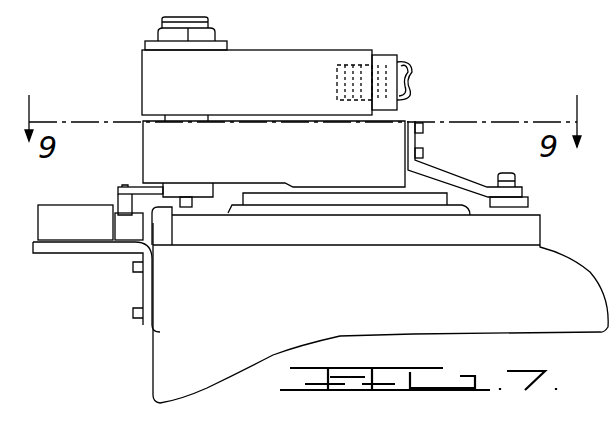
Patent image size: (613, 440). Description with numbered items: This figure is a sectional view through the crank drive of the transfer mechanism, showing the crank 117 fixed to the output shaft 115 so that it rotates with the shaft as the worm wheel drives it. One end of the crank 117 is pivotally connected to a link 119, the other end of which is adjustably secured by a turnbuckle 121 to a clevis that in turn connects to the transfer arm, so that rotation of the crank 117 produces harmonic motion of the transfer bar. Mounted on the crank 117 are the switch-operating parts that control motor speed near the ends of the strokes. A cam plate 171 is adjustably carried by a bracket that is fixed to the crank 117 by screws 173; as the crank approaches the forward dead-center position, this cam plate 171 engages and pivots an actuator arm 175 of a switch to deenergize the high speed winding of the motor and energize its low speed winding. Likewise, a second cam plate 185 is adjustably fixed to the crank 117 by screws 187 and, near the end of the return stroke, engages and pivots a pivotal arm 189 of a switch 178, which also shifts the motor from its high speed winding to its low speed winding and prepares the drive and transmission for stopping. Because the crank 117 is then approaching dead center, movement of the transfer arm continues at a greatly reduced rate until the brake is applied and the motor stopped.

The link 119 is at (280, 57).
The turnbuckle 121 is at (403, 63).
The screws 173 is at (423, 150).
The crank 117 is at (148, 152).
The output shaft 115 is at (415, 185).
The cam plate 171 is at (533, 198).
The cam plate 185 is at (205, 188).
The screws 187 is at (192, 198).
The pivotal arm 189 is at (160, 186).
The switch 178 is at (130, 230).
The actuator arm 175 is at (162, 200).